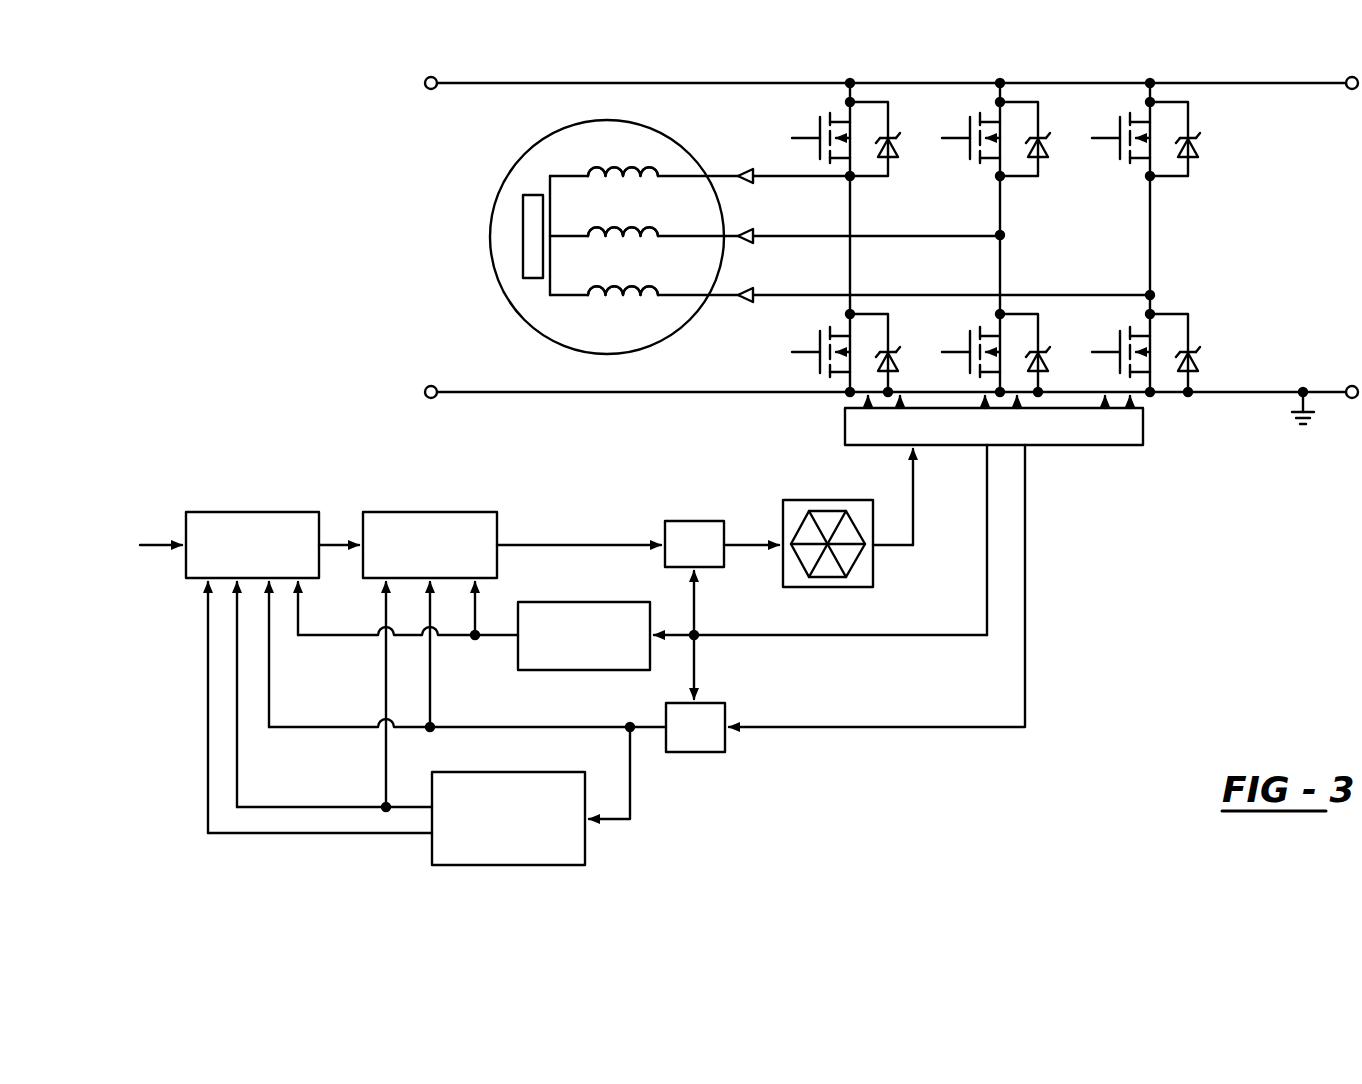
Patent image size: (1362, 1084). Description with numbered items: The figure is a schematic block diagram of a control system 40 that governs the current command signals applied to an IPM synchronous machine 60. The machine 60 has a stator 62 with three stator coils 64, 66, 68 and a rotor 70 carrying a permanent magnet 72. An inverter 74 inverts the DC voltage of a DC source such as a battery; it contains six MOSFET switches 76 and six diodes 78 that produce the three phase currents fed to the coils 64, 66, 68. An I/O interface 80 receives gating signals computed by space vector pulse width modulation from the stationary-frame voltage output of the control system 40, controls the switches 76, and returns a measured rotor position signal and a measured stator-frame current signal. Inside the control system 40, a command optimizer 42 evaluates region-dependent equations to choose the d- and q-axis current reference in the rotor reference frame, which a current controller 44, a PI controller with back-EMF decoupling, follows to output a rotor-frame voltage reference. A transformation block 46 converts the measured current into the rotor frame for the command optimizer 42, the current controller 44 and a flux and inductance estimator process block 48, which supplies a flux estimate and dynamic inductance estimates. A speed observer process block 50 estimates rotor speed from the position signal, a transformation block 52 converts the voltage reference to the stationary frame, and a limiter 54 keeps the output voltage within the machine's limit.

The control system 40 is at (304, 402).
The command optimizer 42 is at (252, 512).
The current controller 44 is at (472, 512).
The transformation block 46 is at (708, 752).
The flux and inductance estimator process block 48 is at (585, 846).
The speed observer process block 50 is at (601, 672).
The transformation block 52 is at (697, 520).
The limiter 54 is at (874, 513).
The IPM synchronous machine 60 is at (628, 124).
The stator 62 is at (641, 156).
The stator coil 64 is at (594, 170).
The stator coil 66 is at (655, 236).
The stator coil 68 is at (645, 293).
The rotor 70 is at (486, 192).
The permanent magnet 72 is at (535, 278).
The inverter 74 is at (1087, 71).
The MOSFET switch 76 is at (968, 126).
The diode 78 is at (1195, 152).
The I/O interface 80 is at (1143, 428).